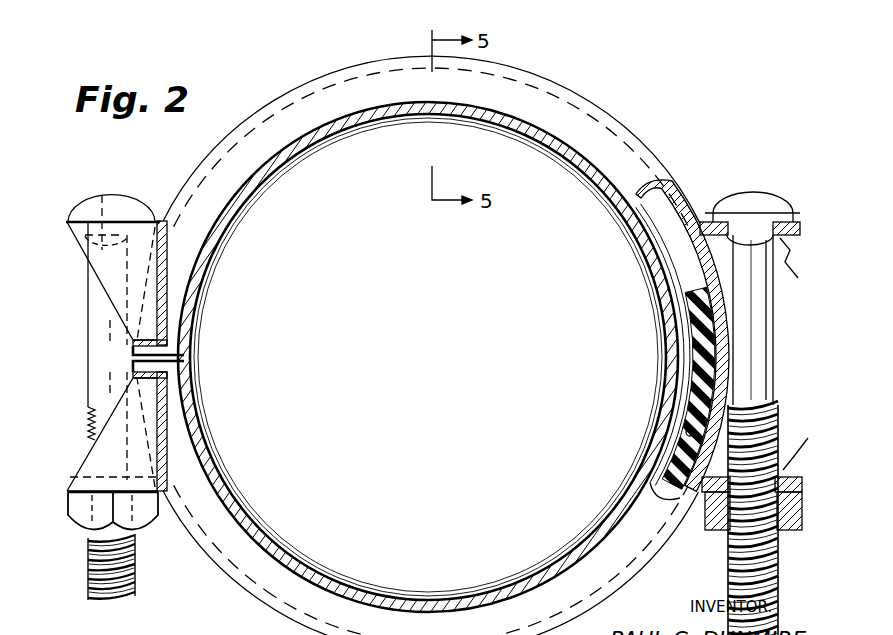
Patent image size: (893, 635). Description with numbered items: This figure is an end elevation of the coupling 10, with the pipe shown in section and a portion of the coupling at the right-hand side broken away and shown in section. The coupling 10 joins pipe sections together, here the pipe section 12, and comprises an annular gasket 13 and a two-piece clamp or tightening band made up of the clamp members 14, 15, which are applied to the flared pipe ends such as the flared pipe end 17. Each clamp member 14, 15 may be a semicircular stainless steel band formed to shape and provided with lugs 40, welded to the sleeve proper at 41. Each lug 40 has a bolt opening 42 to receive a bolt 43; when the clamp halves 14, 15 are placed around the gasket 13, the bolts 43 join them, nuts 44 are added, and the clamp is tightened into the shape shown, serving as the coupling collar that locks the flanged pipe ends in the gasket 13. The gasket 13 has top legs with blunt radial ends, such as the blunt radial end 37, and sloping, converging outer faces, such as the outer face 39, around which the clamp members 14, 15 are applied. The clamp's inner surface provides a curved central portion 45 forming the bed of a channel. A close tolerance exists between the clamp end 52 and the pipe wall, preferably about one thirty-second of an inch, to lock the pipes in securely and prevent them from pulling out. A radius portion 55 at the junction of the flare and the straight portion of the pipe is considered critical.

The coupling 10 is at (446, 317).
The pipe section 12 is at (195, 358).
The annular gasket 13 is at (695, 345).
The clamp member 14 is at (590, 102).
The clamp member 15 is at (250, 596).
The flared pipe end 17 is at (670, 386).
The blunt radial end 37 is at (664, 244).
The sloping outer face 39 is at (668, 223).
The lug 40 is at (100, 283).
The weld 41 is at (168, 300).
The bolt opening 42 is at (105, 200).
The bolt 43 is at (88, 362).
The nut 44 is at (80, 522).
The curved central portion 45 is at (690, 252).
The clamp end 52 is at (218, 475).
The radius portion 55 is at (684, 430).